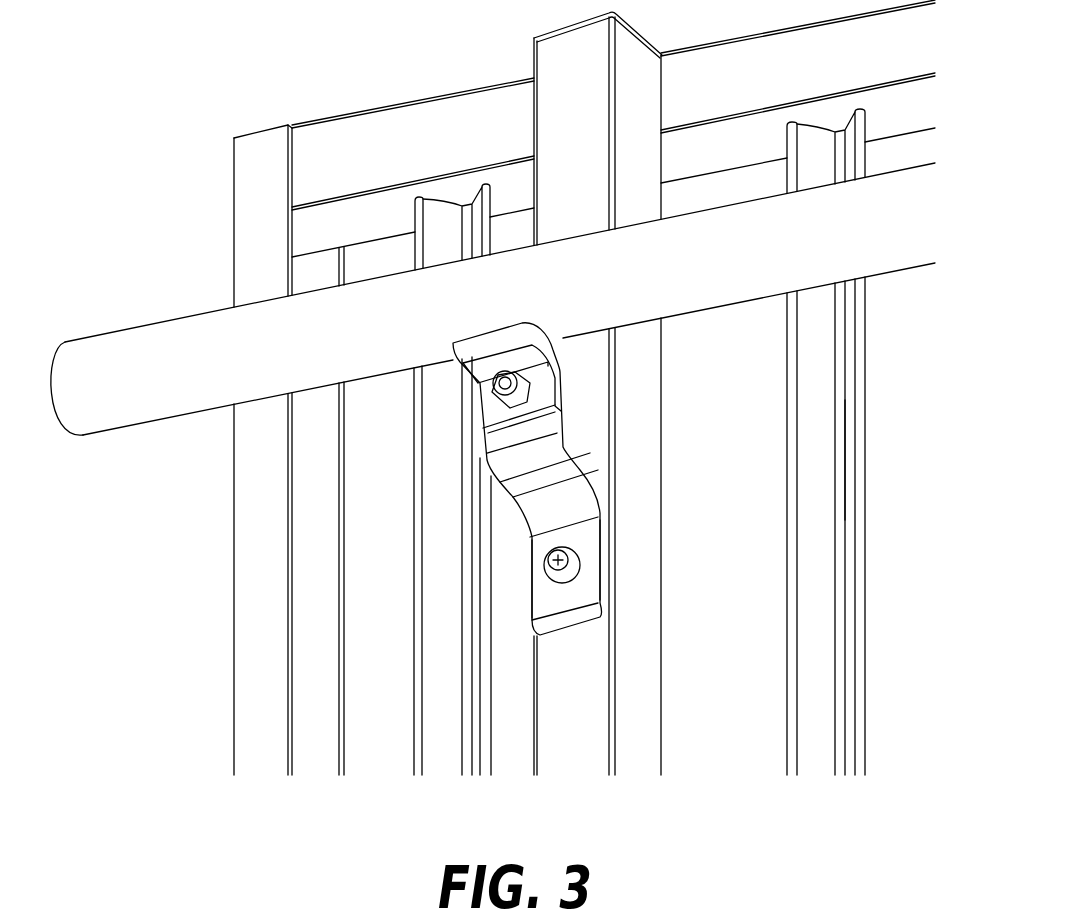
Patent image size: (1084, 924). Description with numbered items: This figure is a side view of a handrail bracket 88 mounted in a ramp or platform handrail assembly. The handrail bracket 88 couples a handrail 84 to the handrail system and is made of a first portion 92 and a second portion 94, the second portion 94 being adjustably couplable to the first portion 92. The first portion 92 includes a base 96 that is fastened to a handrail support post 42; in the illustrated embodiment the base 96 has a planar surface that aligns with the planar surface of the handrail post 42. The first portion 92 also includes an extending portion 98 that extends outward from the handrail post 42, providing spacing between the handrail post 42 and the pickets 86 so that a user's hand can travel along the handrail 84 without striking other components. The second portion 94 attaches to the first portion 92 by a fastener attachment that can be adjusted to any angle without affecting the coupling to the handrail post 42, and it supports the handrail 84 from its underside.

The handrail support post 42 is at (638, 688).
The handrail 84 is at (812, 278).
The pickets 86 is at (865, 548).
The handrail bracket 88 is at (562, 448).
The first portion 92 is at (563, 500).
The second portion 94 is at (550, 348).
The base 96 is at (587, 573).
The extending portion 98 is at (500, 445).